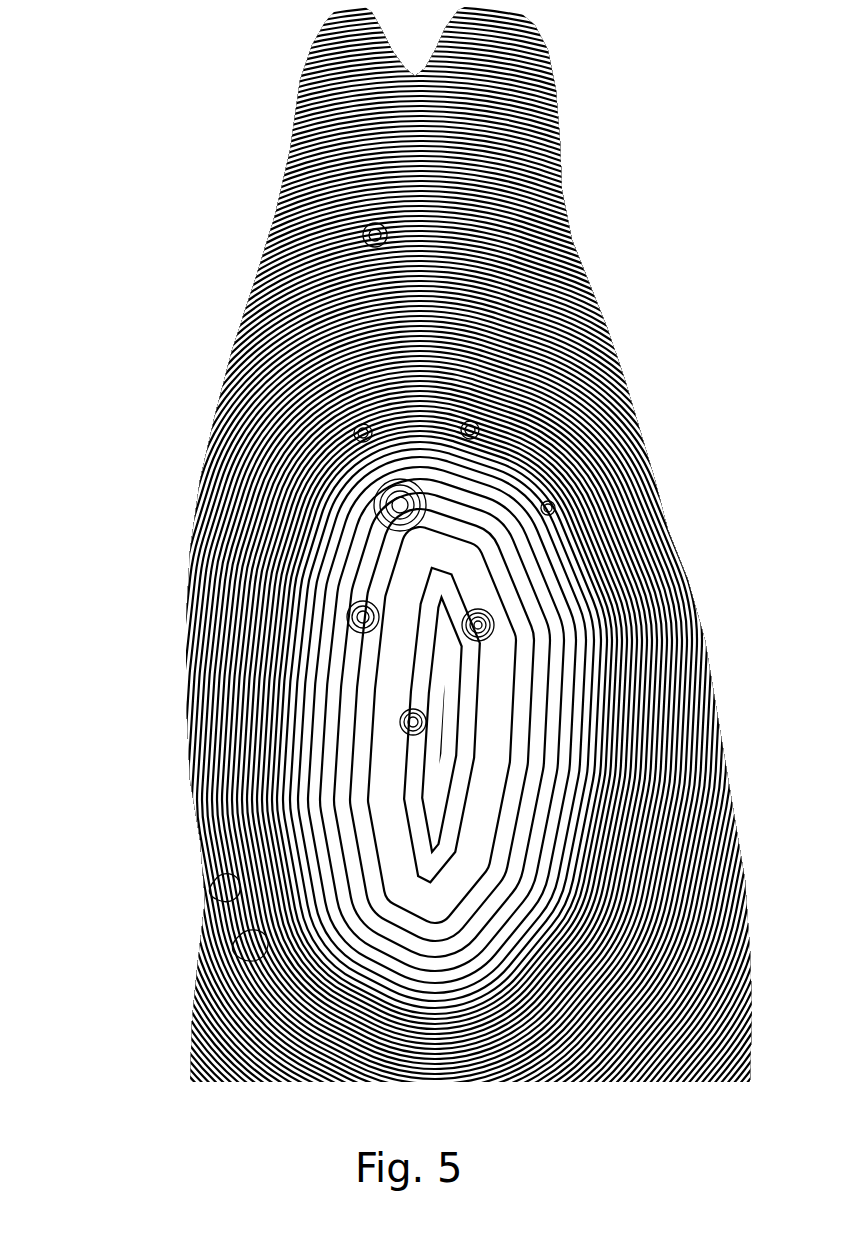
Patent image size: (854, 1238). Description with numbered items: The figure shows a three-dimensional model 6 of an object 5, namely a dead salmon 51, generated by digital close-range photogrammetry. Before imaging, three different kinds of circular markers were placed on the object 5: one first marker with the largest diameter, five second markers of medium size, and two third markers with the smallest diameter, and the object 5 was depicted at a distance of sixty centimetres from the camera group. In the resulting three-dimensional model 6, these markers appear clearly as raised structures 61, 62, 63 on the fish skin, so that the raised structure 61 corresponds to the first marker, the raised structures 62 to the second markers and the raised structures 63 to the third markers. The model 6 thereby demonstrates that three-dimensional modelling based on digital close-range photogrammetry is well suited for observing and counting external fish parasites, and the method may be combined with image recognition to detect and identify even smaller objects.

The object 5 is at (268, 945).
The dead salmon 51 is at (252, 882).
The three-dimensional model 6 is at (178, 540).
The raised structure 61 is at (376, 511).
The raised structure 62 is at (262, 245).
The raised structure 63 is at (541, 511).